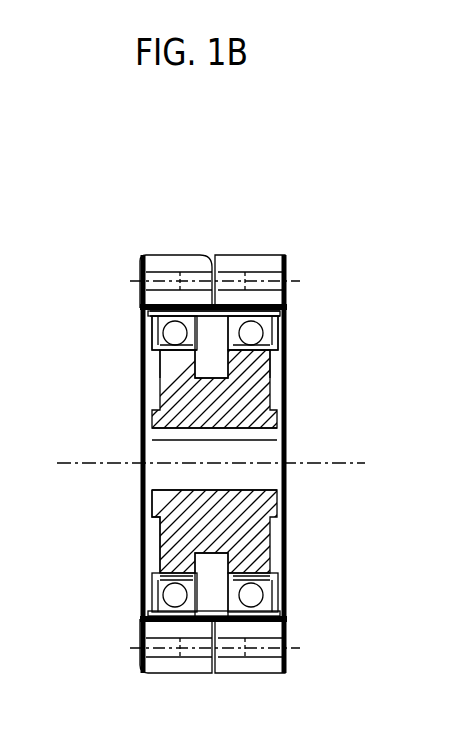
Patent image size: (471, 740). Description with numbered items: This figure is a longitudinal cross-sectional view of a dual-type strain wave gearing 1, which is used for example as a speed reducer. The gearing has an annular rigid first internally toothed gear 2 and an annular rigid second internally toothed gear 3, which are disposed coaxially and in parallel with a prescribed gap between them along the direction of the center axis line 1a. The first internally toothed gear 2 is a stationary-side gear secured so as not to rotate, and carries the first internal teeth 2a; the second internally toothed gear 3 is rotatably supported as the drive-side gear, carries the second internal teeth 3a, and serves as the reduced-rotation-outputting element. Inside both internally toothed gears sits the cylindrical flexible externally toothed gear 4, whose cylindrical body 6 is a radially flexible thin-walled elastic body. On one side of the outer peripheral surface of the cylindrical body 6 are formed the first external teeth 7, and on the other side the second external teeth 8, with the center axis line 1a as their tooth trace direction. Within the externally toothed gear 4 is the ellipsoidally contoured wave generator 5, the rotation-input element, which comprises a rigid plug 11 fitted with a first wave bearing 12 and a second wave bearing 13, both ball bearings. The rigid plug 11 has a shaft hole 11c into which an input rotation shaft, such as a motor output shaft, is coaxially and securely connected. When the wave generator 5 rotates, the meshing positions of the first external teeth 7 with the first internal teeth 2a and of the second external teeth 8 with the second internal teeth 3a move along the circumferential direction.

The strain wave gearing 1 is at (362, 227).
The center axis line 1a is at (350, 463).
The first internally toothed gear 2 is at (258, 279).
The first internal teeth 2a is at (273, 350).
The second internally toothed gear 3 is at (160, 278).
The second internal teeth 3a is at (165, 330).
The externally toothed gear 4 is at (375, 258).
The wave generator 5 is at (286, 428).
The cylindrical body 6 is at (270, 322).
The first external teeth 7 is at (250, 304).
The second external teeth 8 is at (213, 300).
The rigid plug 11 is at (268, 540).
The shaft hole 11c is at (168, 477).
The first wave bearing 12 is at (280, 373).
The second wave bearing 13 is at (168, 334).